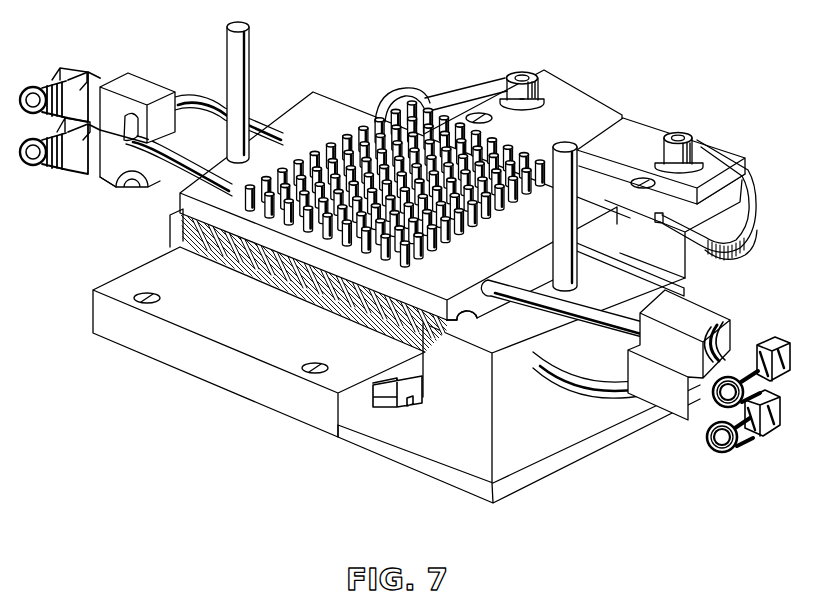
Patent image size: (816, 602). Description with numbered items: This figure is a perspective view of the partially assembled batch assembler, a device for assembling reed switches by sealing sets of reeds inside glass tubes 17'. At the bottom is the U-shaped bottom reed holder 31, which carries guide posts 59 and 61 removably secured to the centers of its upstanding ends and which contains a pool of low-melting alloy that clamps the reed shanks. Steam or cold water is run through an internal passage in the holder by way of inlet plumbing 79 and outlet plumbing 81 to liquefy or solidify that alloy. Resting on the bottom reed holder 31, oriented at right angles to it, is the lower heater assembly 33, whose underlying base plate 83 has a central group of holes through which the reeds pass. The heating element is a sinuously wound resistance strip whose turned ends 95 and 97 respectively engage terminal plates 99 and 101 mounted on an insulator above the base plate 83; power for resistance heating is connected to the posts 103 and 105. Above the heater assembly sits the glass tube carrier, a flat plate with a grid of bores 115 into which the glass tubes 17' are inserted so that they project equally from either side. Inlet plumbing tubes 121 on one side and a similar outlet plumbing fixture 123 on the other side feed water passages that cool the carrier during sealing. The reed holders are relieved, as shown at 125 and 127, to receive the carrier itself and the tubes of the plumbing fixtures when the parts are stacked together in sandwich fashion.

The bottom reed holder 31 is at (521, 449).
The lower heater assembly 33 is at (277, 337).
The glass tubes 17' is at (405, 206).
The bores 115 is at (404, 258).
The relief 125 is at (469, 311).
The relief 127 is at (548, 330).
The outlet plumbing 81 is at (617, 394).
The outlet plumbing fixture 123 is at (685, 291).
The guide post 61 is at (578, 177).
The terminal plate 99 is at (594, 109).
The base plate 83 is at (733, 212).
The terminal plate 101 is at (642, 147).
The post 103 is at (538, 71).
The post 105 is at (694, 137).
The turned end 97 is at (746, 182).
The turned end 95 is at (493, 81).
The inlet plumbing tubes 121 is at (197, 96).
The guide post 59 is at (250, 57).
The inlet plumbing 79 is at (115, 187).